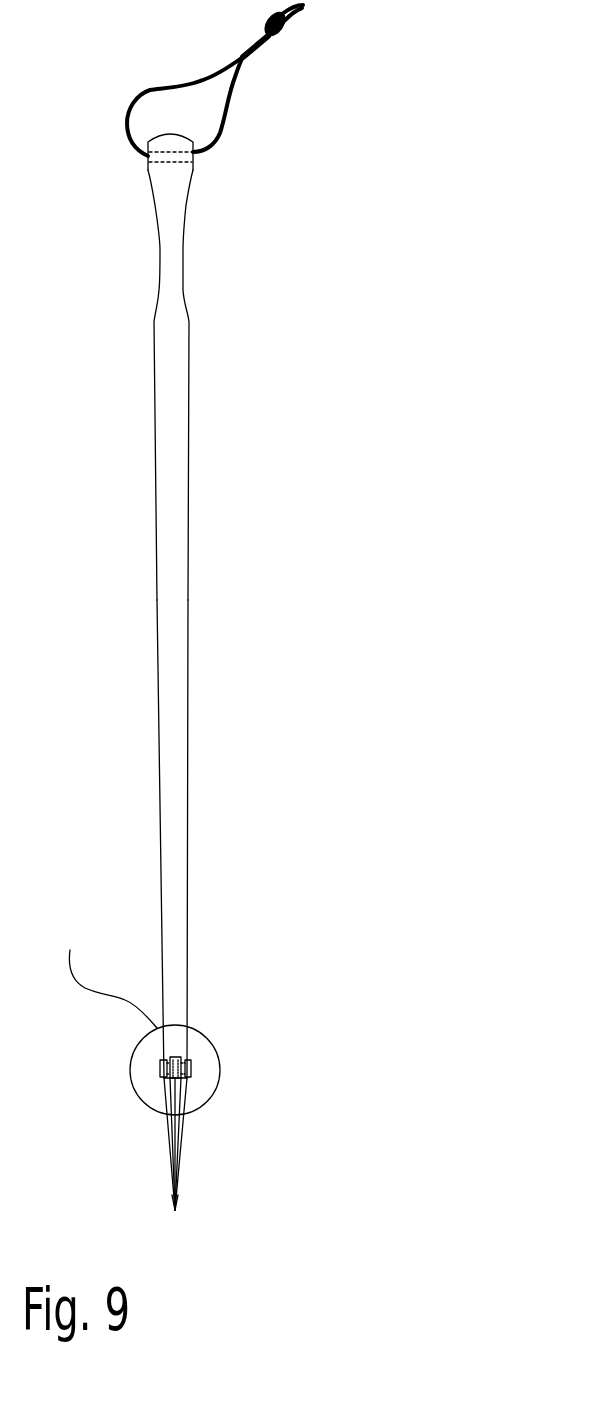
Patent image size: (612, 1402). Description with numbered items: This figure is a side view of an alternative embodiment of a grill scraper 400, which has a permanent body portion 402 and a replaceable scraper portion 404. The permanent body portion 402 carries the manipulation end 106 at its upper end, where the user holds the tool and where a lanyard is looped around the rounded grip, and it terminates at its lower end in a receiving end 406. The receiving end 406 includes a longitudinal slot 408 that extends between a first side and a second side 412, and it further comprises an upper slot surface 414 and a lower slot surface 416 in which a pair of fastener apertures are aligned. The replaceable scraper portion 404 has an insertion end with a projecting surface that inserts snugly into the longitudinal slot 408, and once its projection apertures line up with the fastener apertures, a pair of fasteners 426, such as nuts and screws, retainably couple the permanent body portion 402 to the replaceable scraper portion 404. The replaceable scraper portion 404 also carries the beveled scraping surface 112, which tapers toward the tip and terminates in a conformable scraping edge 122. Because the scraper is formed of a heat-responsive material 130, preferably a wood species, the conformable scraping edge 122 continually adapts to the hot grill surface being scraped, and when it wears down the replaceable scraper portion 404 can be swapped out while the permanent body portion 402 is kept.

The manipulation end 106 is at (172, 143).
The grill scraper 400 is at (228, 657).
The permanent body portion 402 is at (157, 600).
The second side 412 is at (175, 867).
The fasteners 426 is at (160, 1067).
The lower slot surface 416 is at (191, 1073).
The longitudinal slot 408 is at (178, 1060).
The receiving end 406 is at (191, 1077).
The upper slot surface 414 is at (170, 1082).
The beveled scraping surface 112 is at (171, 1150).
The heat-responsive material 130 is at (180, 1150).
The replaceable scraper portion 404 is at (185, 1125).
The conformable scraping edge 122 is at (175, 1210).